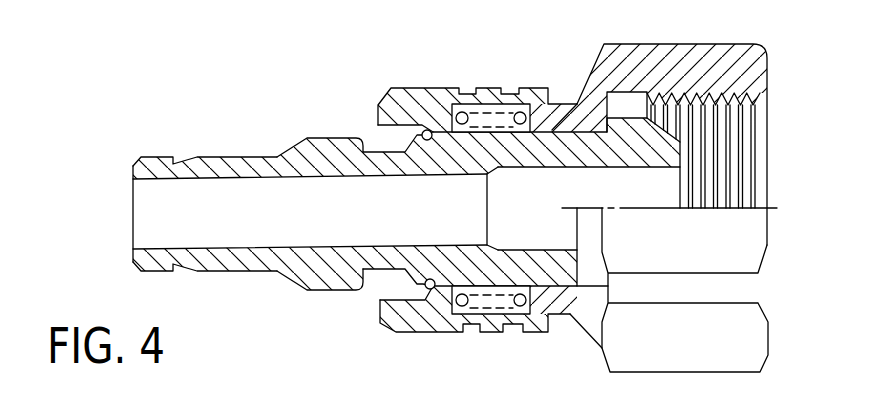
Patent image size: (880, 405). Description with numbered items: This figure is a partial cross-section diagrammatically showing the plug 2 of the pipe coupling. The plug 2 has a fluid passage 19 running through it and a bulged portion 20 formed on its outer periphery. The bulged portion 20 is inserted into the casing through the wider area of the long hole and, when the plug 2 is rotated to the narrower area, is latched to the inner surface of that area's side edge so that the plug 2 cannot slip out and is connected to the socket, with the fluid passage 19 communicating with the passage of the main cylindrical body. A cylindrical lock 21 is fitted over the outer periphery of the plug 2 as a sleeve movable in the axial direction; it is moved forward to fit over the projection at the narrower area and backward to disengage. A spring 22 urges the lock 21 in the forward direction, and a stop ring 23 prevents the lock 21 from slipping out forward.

The plug 2 is at (568, 72).
The fluid passage 19 is at (226, 192).
The bulged portion 20 is at (328, 142).
The cylindrical lock 21 is at (418, 97).
The spring 22 is at (463, 106).
The stop ring 23 is at (430, 290).